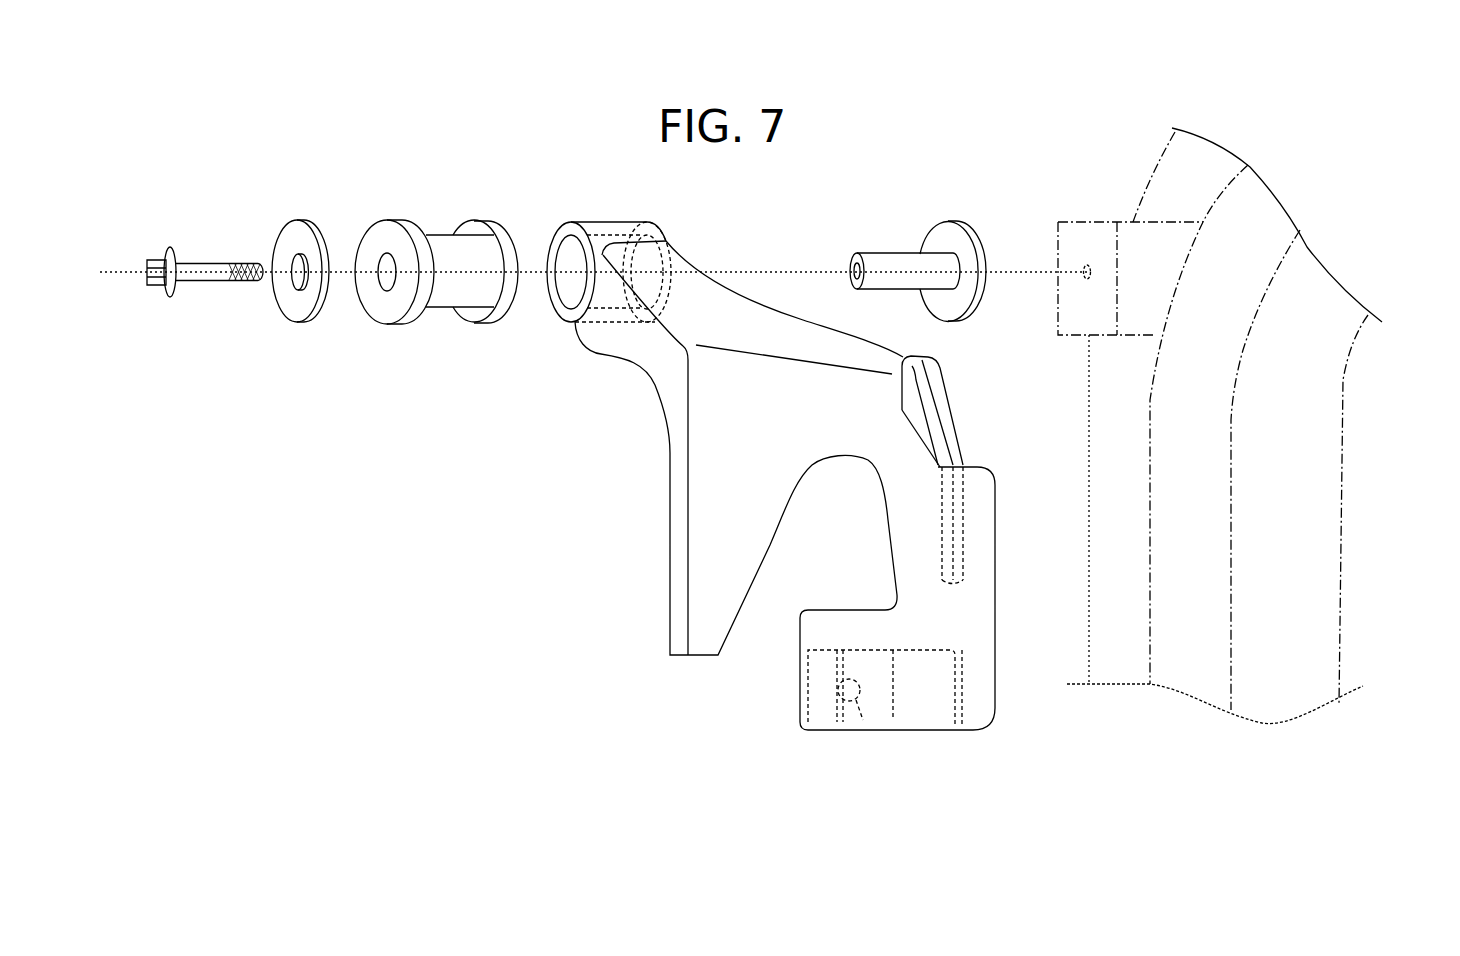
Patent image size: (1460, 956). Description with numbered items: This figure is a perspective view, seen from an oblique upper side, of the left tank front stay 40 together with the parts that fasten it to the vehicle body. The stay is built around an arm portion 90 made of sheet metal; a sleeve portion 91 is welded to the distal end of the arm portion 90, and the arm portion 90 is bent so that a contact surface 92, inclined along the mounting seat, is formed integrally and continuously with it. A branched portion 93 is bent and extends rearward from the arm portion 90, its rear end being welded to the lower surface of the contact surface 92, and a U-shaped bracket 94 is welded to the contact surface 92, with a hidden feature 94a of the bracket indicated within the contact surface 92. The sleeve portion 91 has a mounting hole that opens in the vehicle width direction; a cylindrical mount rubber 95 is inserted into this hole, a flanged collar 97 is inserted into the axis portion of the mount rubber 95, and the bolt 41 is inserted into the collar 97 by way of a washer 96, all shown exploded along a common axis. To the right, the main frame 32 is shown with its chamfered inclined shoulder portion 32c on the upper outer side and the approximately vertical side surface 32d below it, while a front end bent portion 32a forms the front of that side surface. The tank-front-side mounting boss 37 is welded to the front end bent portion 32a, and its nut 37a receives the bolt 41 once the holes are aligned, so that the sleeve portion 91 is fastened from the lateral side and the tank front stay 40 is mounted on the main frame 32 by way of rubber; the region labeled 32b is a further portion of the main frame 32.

The main frame 32 is at (1298, 247).
The front end bent portion 32a is at (1178, 168).
The panel portion 32b is at (1320, 408).
The inclined shoulder portion 32c is at (1213, 552).
The side surface 32d is at (1130, 678).
The tank-front-side mounting boss 37 is at (1083, 227).
The nut 37a is at (1082, 276).
The tank front stay 40 is at (658, 519).
The bolt 41 is at (165, 250).
The arm portion 90 is at (803, 318).
The sleeve portion 91 is at (604, 221).
The contact surface 92 is at (933, 717).
The branched portion 93 is at (957, 409).
The U-shaped bracket 94 is at (830, 712).
The hole inner portion 94a is at (863, 718).
The mount rubber 95 is at (440, 240).
The washer 96 is at (292, 245).
The flanged collar 97 is at (965, 222).